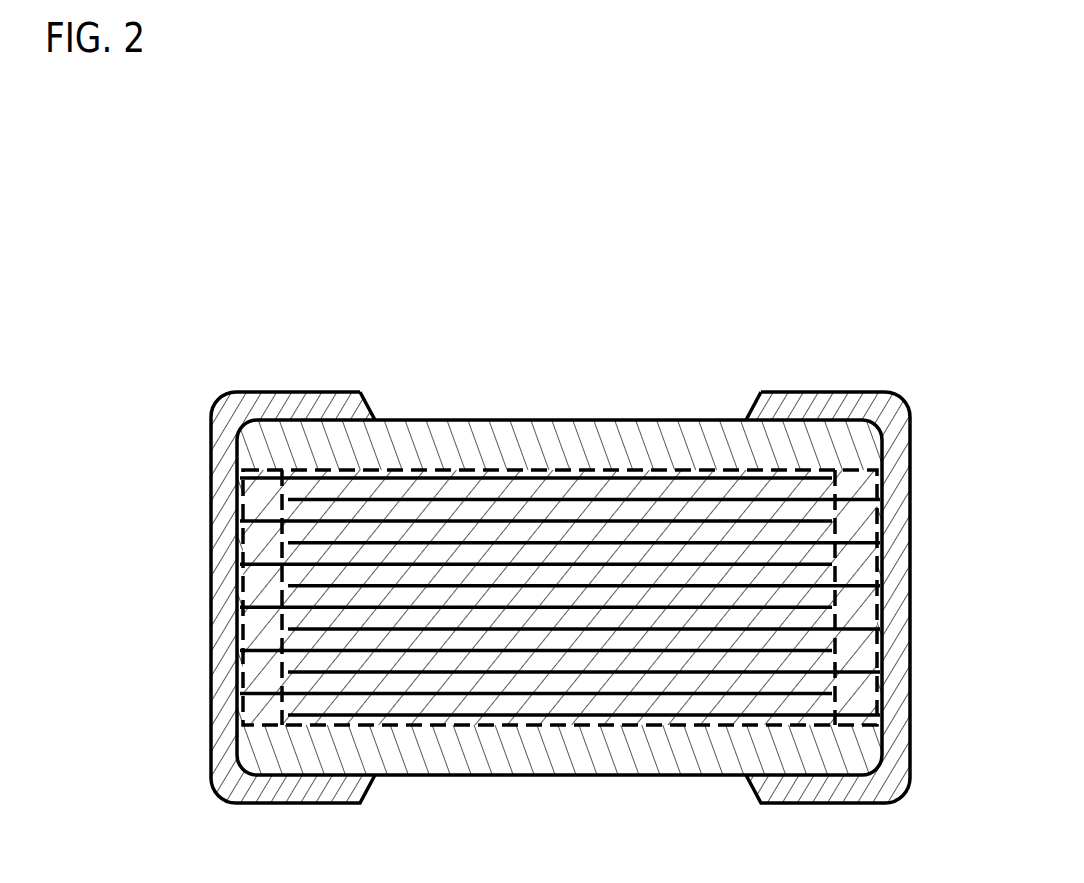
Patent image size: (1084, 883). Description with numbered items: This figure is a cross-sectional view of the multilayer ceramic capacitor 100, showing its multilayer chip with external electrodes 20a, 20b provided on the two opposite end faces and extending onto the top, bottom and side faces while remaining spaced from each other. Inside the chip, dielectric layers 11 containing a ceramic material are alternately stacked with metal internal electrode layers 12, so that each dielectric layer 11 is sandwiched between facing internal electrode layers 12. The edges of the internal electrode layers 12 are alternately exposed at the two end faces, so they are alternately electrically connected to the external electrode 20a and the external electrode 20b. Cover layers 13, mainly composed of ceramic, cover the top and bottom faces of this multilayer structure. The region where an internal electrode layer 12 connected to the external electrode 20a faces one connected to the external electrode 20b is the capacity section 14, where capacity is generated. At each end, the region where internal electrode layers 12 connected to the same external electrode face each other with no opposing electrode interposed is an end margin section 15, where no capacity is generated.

The multilayer ceramic capacitor 100 is at (553, 542).
The dielectric layer 11 is at (690, 675).
The internal electrode layer 12 is at (498, 653).
The cover layer 13 is at (447, 435).
The capacity section 14 is at (587, 468).
The end margin section 15 is at (266, 470).
The external electrode 20a is at (237, 391).
The external electrode 20b is at (872, 392).